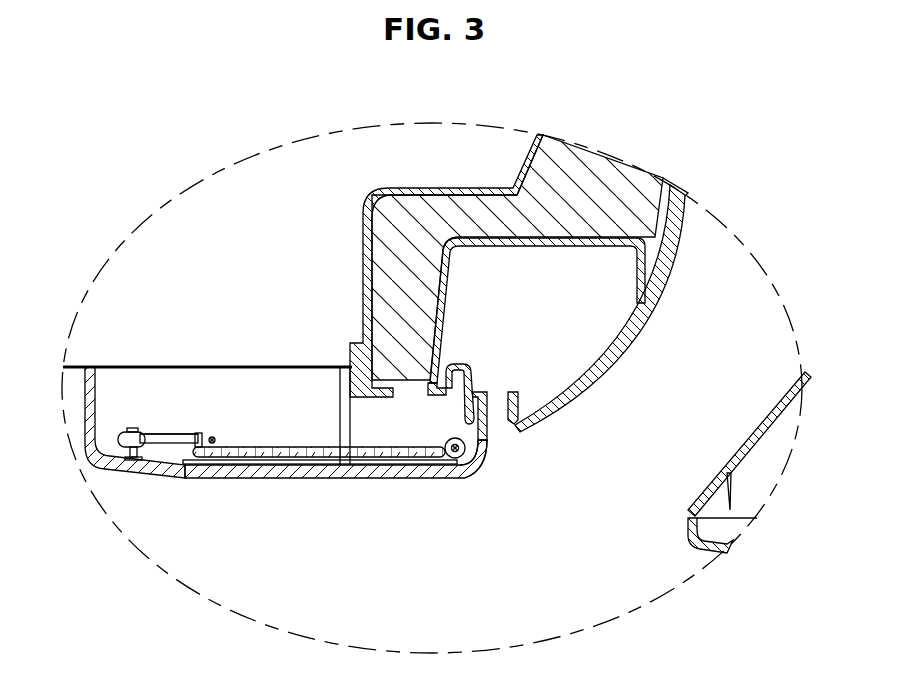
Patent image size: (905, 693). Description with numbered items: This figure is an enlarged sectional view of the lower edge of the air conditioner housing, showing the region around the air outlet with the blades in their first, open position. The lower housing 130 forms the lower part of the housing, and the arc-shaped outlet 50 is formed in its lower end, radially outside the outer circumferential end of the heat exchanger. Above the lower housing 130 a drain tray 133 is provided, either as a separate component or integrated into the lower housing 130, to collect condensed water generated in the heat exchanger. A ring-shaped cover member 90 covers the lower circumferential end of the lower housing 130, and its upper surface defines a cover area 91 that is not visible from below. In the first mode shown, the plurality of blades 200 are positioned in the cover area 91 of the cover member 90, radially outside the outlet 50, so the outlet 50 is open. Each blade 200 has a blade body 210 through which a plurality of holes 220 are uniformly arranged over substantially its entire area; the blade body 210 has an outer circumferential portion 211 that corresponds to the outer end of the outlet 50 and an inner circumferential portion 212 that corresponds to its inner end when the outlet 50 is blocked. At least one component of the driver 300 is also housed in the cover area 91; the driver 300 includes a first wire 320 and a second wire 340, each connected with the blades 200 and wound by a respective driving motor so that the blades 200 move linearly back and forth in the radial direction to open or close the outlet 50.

The outlet 50 is at (667, 488).
The cover member 90 is at (88, 472).
The cover area 91 is at (258, 401).
The lower housing 130 is at (473, 365).
The drain tray 133 is at (595, 168).
The blade 200 is at (300, 437).
The blade body 210 is at (445, 455).
The outer circumferential portion 211 is at (185, 464).
The inner circumferential portion 212 is at (462, 457).
The hole 220 is at (272, 453).
The driver 300 is at (160, 422).
The first wire 320 is at (157, 443).
The second wire 340 is at (467, 448).